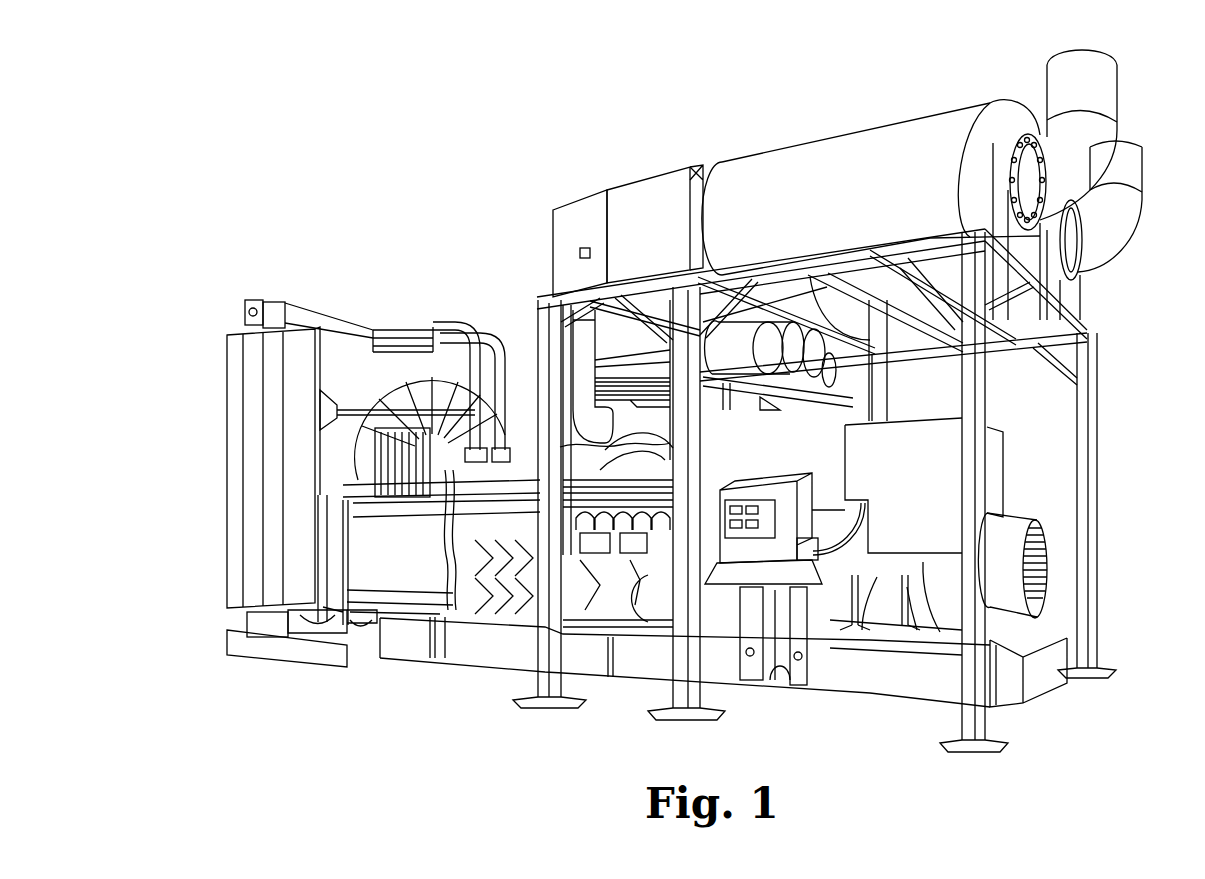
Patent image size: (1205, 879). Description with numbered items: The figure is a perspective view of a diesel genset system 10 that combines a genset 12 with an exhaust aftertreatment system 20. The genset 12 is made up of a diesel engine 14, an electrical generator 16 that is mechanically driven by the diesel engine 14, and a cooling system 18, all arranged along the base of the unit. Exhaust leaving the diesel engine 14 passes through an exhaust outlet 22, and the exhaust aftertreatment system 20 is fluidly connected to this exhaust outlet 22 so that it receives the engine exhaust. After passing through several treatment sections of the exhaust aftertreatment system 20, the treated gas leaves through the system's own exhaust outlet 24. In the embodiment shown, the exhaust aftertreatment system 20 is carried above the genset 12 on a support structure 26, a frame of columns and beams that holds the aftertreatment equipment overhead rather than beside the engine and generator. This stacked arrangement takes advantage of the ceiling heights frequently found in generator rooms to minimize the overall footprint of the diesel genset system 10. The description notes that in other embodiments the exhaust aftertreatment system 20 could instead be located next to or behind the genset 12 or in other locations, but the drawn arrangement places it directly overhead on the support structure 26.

The diesel genset system 10 is at (420, 130).
The genset 12 is at (355, 700).
The diesel engine 14 is at (613, 568).
The electrical generator 16 is at (875, 572).
The cooling system 18 is at (251, 448).
The exhaust aftertreatment system 20 is at (771, 102).
The exhaust outlet 22 is at (582, 380).
The exhaust outlet 24 is at (1095, 85).
The support structure 26 is at (1083, 442).